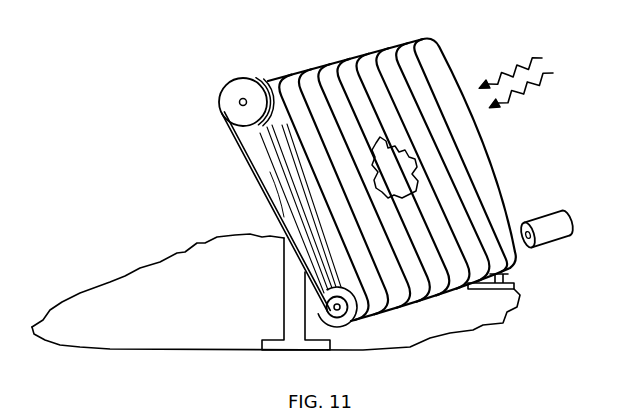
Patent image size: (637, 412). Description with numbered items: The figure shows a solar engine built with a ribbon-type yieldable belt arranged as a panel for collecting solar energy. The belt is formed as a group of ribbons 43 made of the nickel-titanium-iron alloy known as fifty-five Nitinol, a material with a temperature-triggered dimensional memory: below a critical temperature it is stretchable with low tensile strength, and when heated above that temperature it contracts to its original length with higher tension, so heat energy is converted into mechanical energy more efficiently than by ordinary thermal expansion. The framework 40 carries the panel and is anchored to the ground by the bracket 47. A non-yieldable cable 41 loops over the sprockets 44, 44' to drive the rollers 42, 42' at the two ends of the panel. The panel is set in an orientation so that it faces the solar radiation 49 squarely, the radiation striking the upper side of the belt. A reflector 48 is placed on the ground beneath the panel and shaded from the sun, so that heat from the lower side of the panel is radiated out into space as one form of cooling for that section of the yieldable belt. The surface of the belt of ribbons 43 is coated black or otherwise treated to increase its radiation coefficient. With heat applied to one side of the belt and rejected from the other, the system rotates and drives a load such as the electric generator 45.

The framework 40 is at (290, 190).
The non-yieldable cable 41 is at (268, 173).
The roller 42 is at (384, 176).
The roller 42' is at (433, 293).
The ribbons 43 is at (395, 167).
The sprocket 44 is at (219, 102).
The sprocket 44' is at (350, 316).
The electric generator 45 is at (572, 213).
The bracket 47 is at (284, 310).
The reflector 48 is at (276, 292).
The solar radiation 49 is at (516, 65).